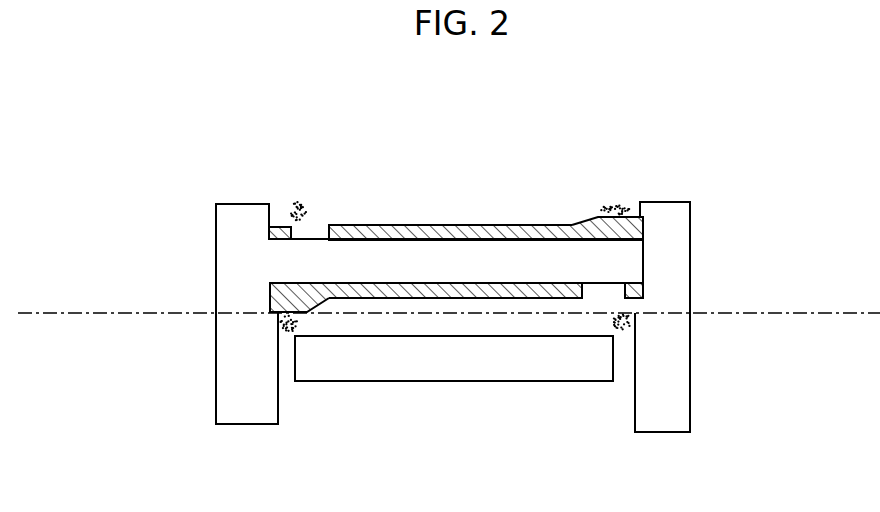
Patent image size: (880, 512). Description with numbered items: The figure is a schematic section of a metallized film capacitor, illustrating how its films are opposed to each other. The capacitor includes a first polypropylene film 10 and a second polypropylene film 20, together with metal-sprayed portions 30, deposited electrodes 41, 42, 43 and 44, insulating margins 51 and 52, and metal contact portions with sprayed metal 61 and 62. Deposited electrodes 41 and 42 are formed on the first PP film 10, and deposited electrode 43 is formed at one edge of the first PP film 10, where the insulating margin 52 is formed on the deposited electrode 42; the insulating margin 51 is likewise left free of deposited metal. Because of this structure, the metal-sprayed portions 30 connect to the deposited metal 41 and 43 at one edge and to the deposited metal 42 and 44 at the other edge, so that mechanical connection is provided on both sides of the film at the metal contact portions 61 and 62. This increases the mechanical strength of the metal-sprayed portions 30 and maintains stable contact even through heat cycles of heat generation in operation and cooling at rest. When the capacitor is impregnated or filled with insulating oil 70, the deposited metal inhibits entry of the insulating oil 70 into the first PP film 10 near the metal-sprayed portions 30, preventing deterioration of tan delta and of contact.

The first polypropylene film 10 is at (577, 265).
The second polypropylene film 20 is at (598, 362).
The metal-sprayed portions 30 is at (675, 315).
The deposited electrode 41 is at (418, 228).
The deposited electrode 42 is at (493, 290).
The deposited electrode 43 is at (637, 295).
The deposited electrode 44 is at (272, 226).
The insulating margin 51 is at (312, 232).
The insulating margin 52 is at (602, 300).
The metal contact portion with sprayed metal 61 is at (282, 313).
The metal contact portion with sprayed metal 62 is at (640, 226).
The insulating oil 70 is at (293, 204).